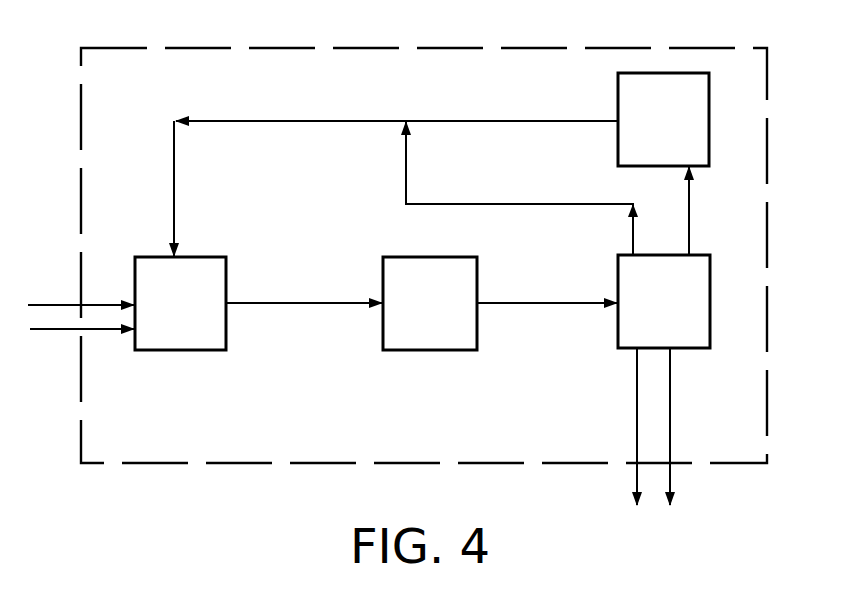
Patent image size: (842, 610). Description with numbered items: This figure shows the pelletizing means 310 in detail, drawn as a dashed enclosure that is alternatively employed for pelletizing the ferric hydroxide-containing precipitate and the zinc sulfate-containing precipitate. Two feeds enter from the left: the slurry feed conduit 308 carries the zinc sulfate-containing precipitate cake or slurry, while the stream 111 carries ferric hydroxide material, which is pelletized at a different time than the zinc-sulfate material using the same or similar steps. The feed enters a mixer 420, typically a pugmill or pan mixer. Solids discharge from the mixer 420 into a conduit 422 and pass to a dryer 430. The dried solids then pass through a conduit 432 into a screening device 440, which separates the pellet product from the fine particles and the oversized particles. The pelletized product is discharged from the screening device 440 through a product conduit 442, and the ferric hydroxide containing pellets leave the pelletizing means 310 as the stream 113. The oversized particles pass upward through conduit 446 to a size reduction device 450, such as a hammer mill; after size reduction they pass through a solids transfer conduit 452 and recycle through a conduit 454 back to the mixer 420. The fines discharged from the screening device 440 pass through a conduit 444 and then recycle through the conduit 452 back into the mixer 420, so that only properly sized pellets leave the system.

The slurry feed conduit 308 is at (52, 287).
The stream 111 is at (70, 333).
The pelletizing means 310 is at (232, 465).
The mixer 420 is at (152, 347).
The conduit 422 is at (250, 309).
The dryer 430 is at (440, 352).
The conduit 432 is at (570, 311).
The screening device 440 is at (620, 331).
The product conduit 442 is at (683, 386).
The conduit 444 is at (440, 204).
The conduit 446 is at (698, 206).
The size reduction device 450 is at (618, 142).
The solids transfer conduit 452 is at (447, 121).
The conduit 454 is at (174, 168).
The stream 113 is at (635, 468).